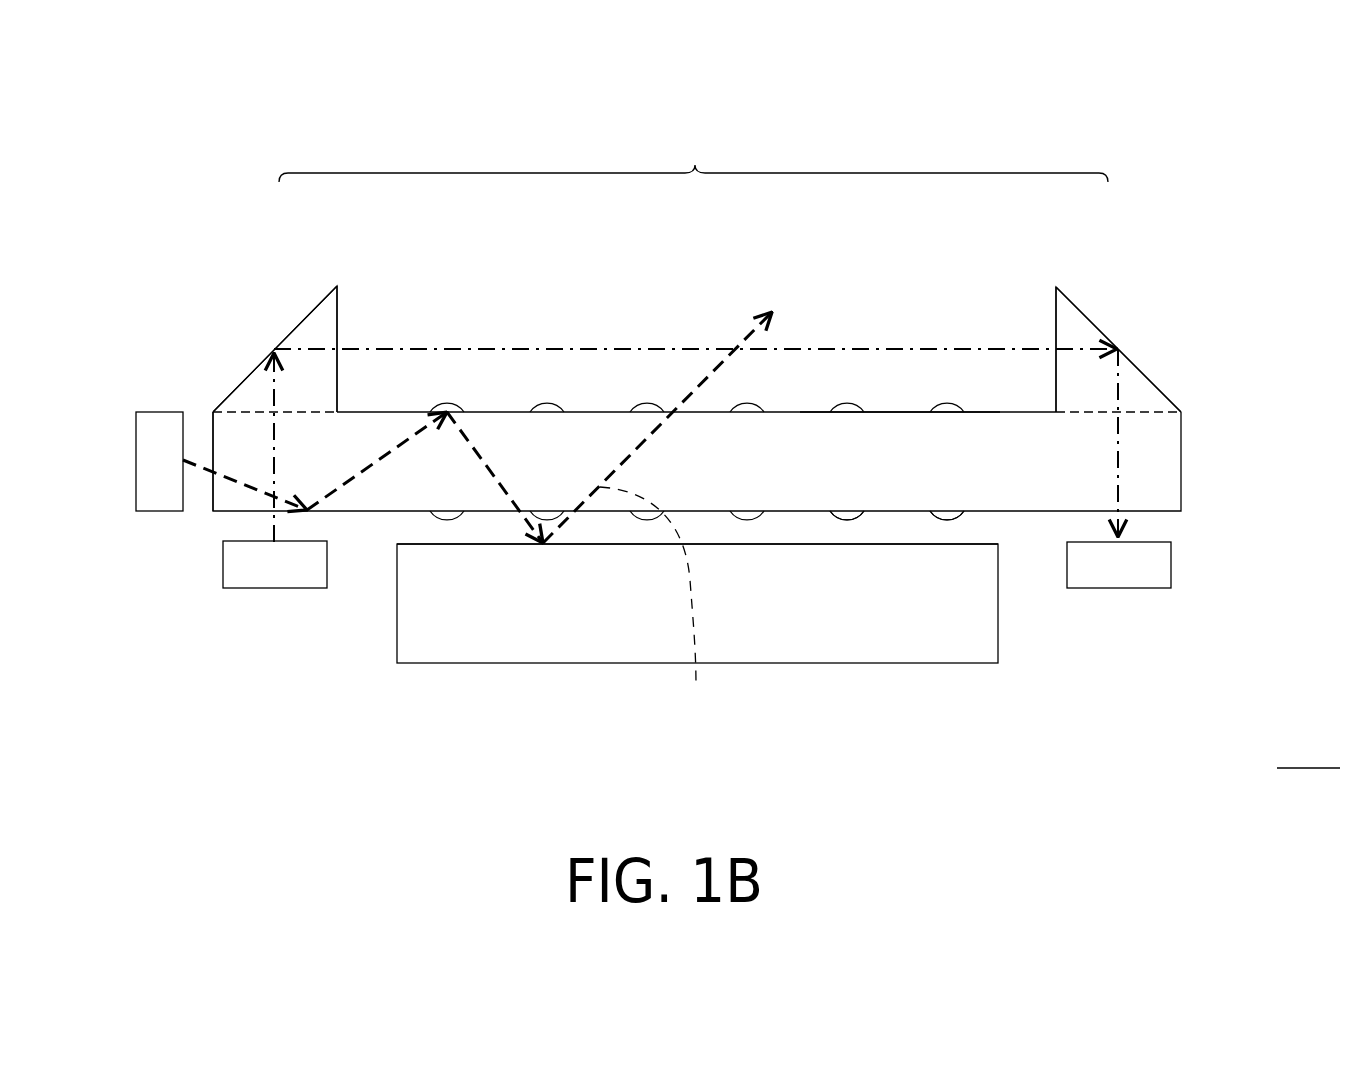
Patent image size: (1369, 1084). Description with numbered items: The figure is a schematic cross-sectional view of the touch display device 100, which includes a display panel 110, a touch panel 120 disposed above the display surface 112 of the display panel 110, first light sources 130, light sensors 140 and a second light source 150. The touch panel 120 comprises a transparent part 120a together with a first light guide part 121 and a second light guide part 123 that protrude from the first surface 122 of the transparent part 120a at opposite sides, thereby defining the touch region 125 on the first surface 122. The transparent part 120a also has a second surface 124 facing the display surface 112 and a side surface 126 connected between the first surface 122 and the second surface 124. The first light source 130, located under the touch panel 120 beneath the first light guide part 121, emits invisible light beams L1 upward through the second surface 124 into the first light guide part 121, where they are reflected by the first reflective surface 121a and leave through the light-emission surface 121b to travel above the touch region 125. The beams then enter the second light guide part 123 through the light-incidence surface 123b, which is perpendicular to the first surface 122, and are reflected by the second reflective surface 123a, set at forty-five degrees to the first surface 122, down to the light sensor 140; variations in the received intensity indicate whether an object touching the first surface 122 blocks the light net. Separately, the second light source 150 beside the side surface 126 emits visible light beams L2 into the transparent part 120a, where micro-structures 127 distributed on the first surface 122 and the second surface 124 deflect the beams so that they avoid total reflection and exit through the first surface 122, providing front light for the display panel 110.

The touch display device 100 is at (1308, 749).
The display panel 110 is at (472, 663).
The display surface 112 is at (973, 542).
The touch panel 120 is at (697, 317).
The transparent part 120a is at (647, 425).
The first light guide part 121 is at (326, 298).
The first reflective surface 121a is at (253, 373).
The light-emission surface 121b is at (339, 380).
The first surface 122 is at (879, 411).
The second light guide part 123 is at (1068, 315).
The second reflective surface 123a is at (1187, 367).
The light-incidence surface 123b is at (1054, 380).
The second surface 124 is at (921, 514).
The touch region 125 is at (807, 339).
The side surface 126 is at (212, 502).
The micro-structures 127 is at (547, 405).
The first light source 130 is at (257, 588).
The light sensor 140 is at (1171, 563).
The second light source 150 is at (136, 460).
The invisible light beams L1 is at (1118, 461).
The visible light beams L2 is at (658, 614).